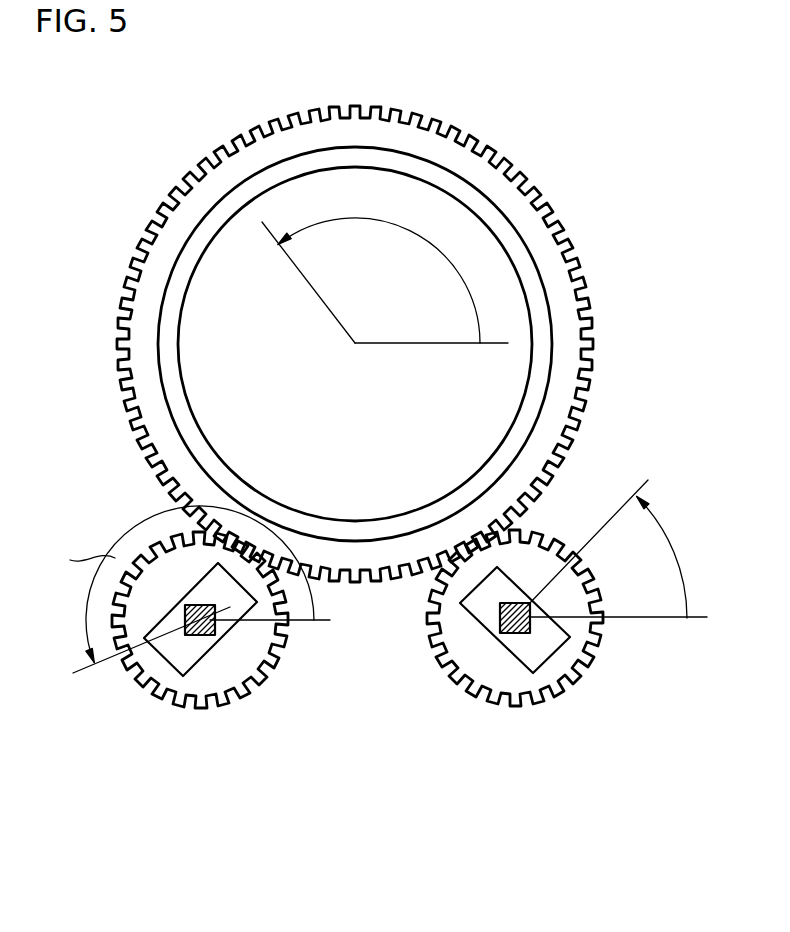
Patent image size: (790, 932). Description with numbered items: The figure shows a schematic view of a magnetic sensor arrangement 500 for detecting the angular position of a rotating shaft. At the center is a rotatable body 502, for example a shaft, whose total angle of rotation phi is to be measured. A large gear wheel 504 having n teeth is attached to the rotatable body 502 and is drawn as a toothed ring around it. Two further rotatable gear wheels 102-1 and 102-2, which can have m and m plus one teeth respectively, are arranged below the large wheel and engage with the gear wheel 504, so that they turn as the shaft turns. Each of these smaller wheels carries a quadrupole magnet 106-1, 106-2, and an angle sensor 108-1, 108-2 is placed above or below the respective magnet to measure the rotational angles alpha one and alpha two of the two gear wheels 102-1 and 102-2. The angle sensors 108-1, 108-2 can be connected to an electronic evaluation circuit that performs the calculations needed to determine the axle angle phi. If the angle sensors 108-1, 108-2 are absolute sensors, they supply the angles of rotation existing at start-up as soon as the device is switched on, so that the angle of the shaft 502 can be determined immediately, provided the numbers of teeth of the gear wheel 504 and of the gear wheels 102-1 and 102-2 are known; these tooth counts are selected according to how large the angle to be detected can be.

The magnetic sensor arrangement 500 is at (372, 413).
The rotatable body 502 is at (542, 360).
The gear wheel 504 is at (570, 250).
The rotatable gear wheel 102-1 is at (238, 675).
The rotatable gear wheel 102-2 is at (475, 677).
The quadrupole magnet 106-1 is at (170, 648).
The quadrupole magnet 106-2 is at (543, 643).
The angle sensor 108-1 is at (192, 637).
The angle sensor 108-2 is at (523, 633).